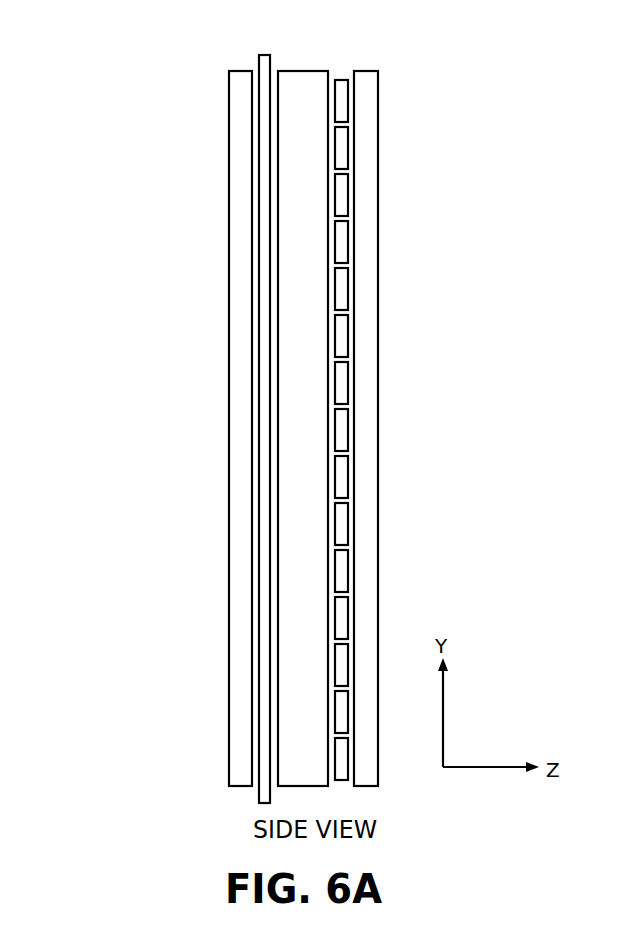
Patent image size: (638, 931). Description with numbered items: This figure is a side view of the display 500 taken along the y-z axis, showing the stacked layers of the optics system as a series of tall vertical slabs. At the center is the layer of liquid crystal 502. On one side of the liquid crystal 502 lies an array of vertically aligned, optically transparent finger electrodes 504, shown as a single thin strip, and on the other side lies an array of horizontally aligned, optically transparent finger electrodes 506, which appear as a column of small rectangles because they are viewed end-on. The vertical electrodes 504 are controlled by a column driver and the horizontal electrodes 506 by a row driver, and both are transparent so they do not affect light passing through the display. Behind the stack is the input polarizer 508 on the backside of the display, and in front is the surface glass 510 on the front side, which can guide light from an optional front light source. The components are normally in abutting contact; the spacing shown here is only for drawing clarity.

The display 500 is at (118, 91).
The liquid crystal 502 is at (305, 71).
The vertically aligned finger electrodes 504 is at (264, 55).
The horizontally aligned finger electrodes 506 is at (343, 80).
The input polarizer 508 is at (229, 216).
The surface glass 510 is at (378, 216).